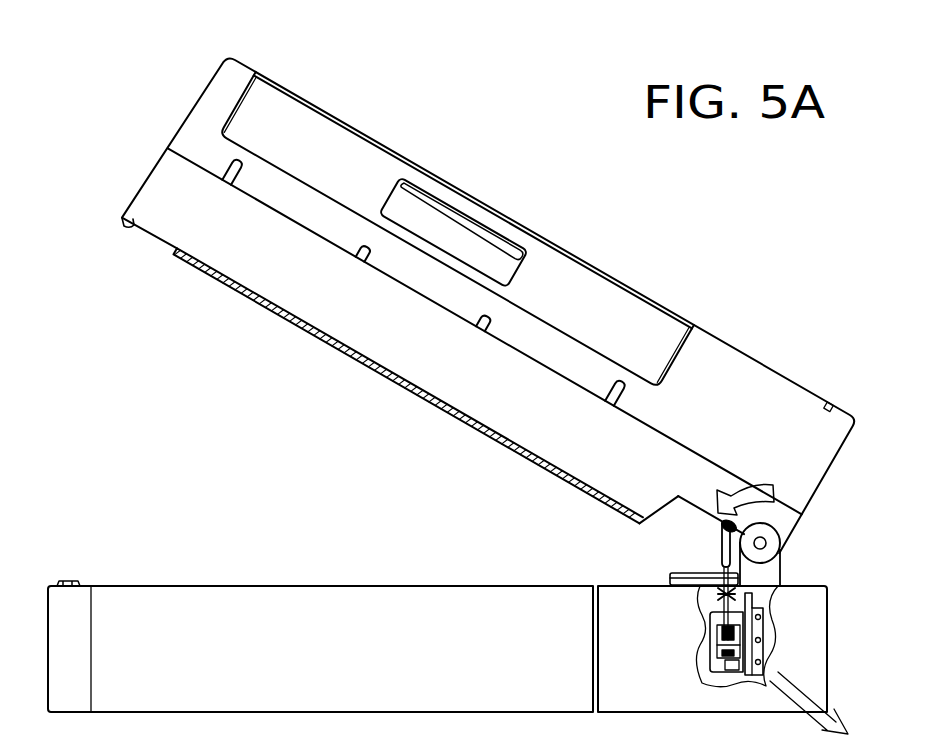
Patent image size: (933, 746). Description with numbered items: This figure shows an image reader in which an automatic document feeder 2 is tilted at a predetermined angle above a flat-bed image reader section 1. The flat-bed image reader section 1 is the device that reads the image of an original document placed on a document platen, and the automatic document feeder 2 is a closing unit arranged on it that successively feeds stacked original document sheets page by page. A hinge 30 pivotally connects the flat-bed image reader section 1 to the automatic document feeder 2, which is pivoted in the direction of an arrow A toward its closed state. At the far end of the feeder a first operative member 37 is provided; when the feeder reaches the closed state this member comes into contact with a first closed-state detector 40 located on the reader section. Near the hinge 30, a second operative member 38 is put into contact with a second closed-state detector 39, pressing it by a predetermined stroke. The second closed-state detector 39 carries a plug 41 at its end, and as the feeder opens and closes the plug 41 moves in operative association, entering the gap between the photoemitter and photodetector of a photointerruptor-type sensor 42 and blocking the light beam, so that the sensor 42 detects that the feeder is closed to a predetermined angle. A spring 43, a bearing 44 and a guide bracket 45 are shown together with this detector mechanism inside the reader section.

The flat-bed image reader section 1 is at (829, 650).
The automatic document feeder 2 is at (590, 263).
The hinge 30 is at (782, 546).
The first operative member 37 is at (131, 229).
The second operative member 38 is at (738, 525).
The second closed-state detector 39 is at (722, 537).
The first closed-state detector 40 is at (69, 580).
The plug 41 is at (725, 652).
The photointerruptor-type sensor 42 is at (723, 673).
The spring 43 is at (727, 600).
The bearing 44 is at (677, 583).
The guide bracket 45 is at (766, 624).
The arrow A is at (747, 487).